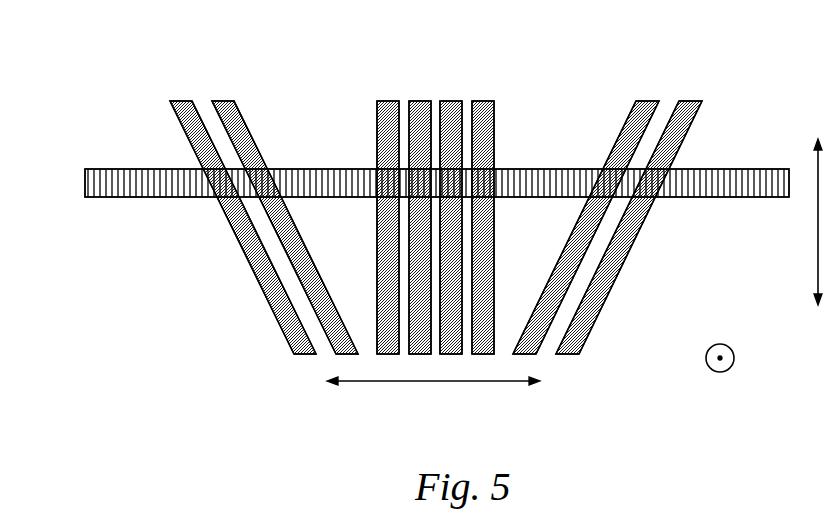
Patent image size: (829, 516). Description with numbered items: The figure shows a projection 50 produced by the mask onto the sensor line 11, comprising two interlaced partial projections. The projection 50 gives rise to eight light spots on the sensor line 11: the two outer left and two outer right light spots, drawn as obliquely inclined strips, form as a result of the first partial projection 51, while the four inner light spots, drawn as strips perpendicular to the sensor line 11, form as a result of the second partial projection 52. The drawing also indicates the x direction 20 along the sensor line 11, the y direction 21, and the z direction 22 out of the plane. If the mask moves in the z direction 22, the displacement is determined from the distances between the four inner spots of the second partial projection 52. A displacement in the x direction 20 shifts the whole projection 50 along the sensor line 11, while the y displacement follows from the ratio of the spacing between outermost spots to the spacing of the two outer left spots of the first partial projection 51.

The sensor line 11 is at (399, 205).
The x direction 20 is at (409, 396).
The y direction 21 is at (777, 222).
The z direction 22 is at (689, 372).
The projection 50 is at (399, 188).
The first partial projection 51 is at (434, 184).
The second partial projection 52 is at (449, 187).